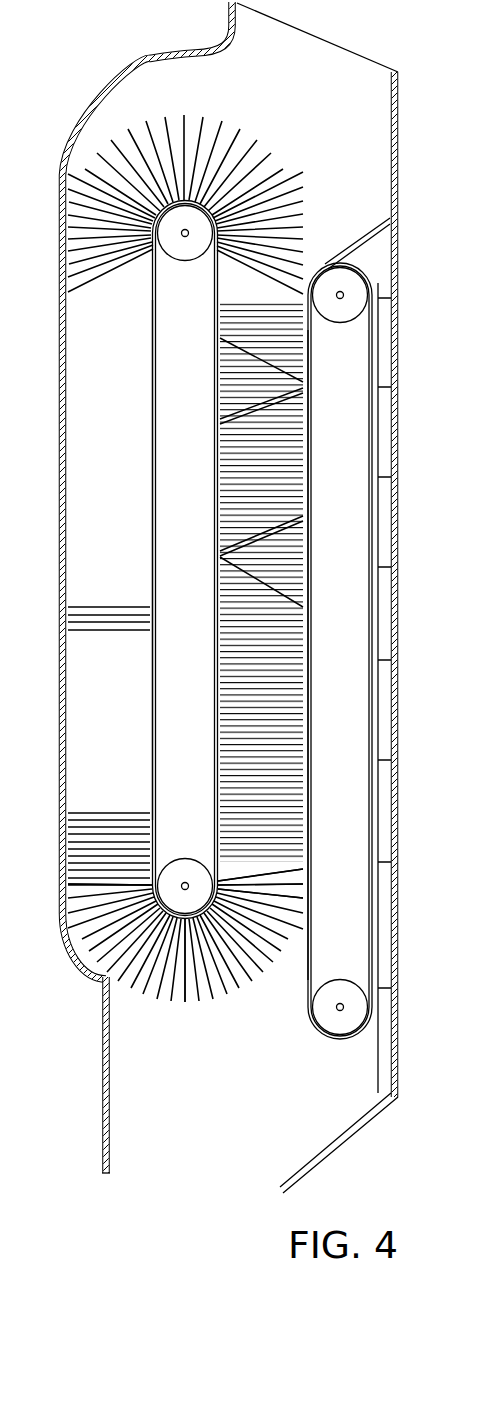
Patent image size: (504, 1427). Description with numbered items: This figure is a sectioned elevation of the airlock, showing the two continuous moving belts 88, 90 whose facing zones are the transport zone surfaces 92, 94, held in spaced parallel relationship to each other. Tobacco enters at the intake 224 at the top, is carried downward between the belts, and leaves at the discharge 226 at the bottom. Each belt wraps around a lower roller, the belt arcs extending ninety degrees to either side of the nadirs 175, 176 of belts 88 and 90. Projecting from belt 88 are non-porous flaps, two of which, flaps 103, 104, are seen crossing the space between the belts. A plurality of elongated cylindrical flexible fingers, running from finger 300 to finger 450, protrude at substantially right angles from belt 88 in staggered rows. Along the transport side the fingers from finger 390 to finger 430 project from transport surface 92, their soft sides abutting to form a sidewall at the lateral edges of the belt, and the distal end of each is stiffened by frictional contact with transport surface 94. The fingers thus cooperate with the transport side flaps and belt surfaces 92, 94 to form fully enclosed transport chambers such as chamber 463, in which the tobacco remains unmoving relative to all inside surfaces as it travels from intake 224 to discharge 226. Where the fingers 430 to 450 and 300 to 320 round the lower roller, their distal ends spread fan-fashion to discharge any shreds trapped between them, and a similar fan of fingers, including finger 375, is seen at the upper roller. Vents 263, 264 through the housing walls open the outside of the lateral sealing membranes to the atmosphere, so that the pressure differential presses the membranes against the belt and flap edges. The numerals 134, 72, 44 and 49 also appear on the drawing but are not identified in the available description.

The intake 224 is at (290, 60).
The flexible finger 375 is at (237, 127).
The flexible finger 390 is at (313, 263).
The vent 263 is at (10, 240).
The housing wall 134 is at (61, 447).
The transport zone surface 92 is at (218, 448).
The continuous moving belt 88 is at (213, 528).
The flap 103 is at (262, 403).
The flap 104 is at (278, 528).
The transport chamber 463 is at (272, 462).
The transport zone surface 94 is at (307, 520).
The continuous moving belt 90 is at (310, 624).
The sheet group 72 is at (75, 609).
The compartment 44 is at (9, 735).
The sheet group 49 is at (75, 845).
The flexible finger 320 is at (80, 890).
The nadir 175 is at (190, 910).
The flexible finger 430 is at (273, 883).
The vent 264 is at (58, 1075).
The flexible finger 450 is at (190, 997).
The flexible finger 300 is at (173, 1000).
The nadir 176 is at (345, 1043).
The discharge 226 is at (198, 1178).